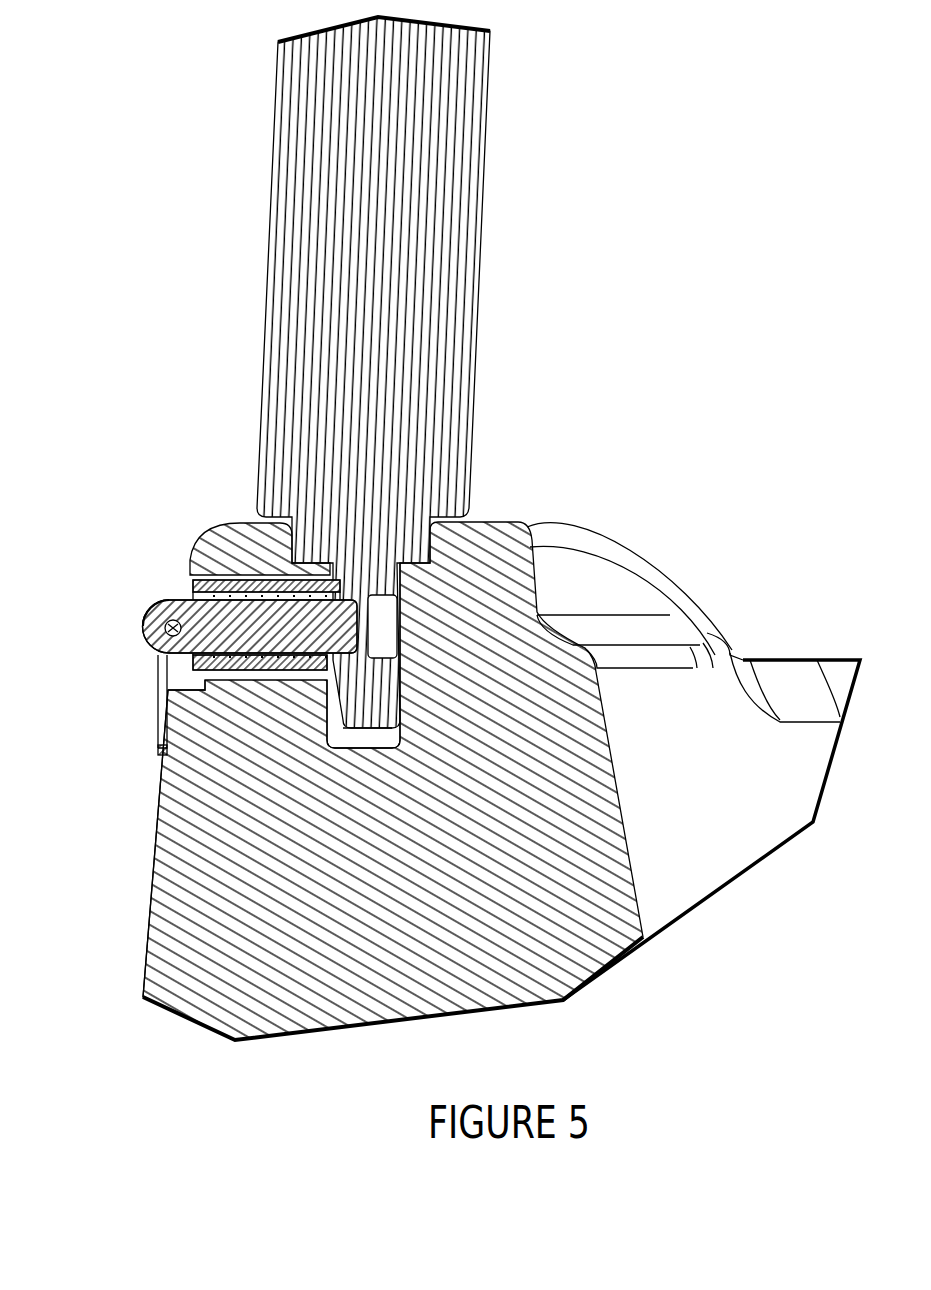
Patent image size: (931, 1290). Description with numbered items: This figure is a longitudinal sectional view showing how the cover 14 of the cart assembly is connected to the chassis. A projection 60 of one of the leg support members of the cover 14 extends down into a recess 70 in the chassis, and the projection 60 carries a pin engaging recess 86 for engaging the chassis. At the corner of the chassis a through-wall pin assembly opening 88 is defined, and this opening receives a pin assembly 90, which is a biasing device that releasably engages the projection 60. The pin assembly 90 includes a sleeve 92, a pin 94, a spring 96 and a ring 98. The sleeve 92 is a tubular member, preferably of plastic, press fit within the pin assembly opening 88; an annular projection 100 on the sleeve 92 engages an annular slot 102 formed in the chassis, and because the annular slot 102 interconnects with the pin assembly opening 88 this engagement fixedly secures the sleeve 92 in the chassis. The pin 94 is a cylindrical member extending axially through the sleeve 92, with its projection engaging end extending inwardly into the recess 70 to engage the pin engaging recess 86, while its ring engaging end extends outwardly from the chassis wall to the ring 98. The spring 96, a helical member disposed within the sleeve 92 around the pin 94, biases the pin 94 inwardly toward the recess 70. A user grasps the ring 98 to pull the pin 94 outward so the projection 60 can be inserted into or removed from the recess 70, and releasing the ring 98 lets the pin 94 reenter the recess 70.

The cover 14 is at (288, 248).
The projection 60 is at (358, 627).
The recess 70 is at (478, 515).
The pin engaging recess 86 is at (378, 695).
The pin assembly opening 88 is at (277, 672).
The pin assembly 90 is at (128, 604).
The sleeve 92 is at (256, 583).
The pin 94 is at (162, 638).
The spring 96 is at (237, 676).
The ring 98 is at (158, 694).
The annular projection 100 is at (234, 583).
The annular slot 102 is at (160, 753).